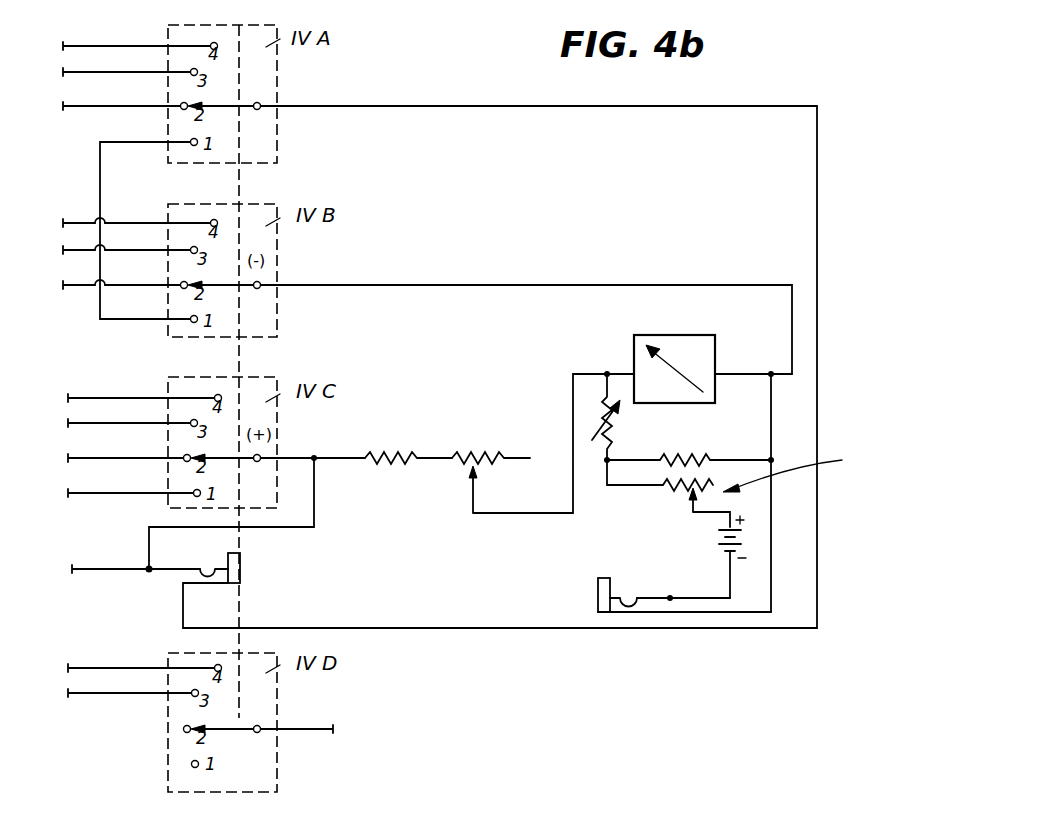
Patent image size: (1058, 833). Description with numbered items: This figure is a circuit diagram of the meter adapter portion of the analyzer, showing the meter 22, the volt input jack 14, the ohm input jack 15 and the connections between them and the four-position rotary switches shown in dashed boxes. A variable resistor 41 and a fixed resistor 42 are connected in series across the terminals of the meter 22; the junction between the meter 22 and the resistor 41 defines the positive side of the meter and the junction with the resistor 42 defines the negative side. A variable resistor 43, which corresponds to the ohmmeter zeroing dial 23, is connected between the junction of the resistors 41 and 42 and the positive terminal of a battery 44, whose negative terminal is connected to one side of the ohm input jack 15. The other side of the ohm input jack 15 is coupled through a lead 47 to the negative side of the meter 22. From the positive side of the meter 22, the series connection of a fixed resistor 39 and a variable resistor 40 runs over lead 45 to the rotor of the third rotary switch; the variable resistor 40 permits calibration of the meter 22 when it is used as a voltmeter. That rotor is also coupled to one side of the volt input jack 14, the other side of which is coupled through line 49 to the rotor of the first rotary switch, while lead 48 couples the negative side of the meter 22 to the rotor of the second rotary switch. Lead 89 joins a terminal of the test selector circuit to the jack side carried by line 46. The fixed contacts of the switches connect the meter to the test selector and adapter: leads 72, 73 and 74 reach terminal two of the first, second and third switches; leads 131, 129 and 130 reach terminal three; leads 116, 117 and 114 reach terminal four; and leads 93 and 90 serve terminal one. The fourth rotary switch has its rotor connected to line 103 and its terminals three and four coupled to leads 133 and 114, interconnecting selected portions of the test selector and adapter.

The volt input jack 14 is at (240, 578).
The ohm input jack 15 is at (598, 591).
The meter 22 is at (715, 336).
The ohmmeter zeroing dial 23 is at (837, 486).
The fixed resistor 39 is at (408, 452).
The variable resistor 40 is at (469, 452).
The variable resistor 41 is at (623, 427).
The fixed resistor 42 is at (700, 455).
The variable resistor 43 is at (671, 500).
The battery 44 is at (722, 540).
The lead 45 is at (341, 458).
The line 46 is at (269, 528).
The lead 47 is at (771, 564).
The lead 48 is at (437, 284).
The line 49 is at (417, 106).
The lead 72 is at (111, 105).
The lead 73 is at (84, 290).
The lead 74 is at (123, 456).
The lead 89 is at (168, 572).
The lead 90 is at (115, 491).
The lead 93 is at (98, 142).
The line 103 is at (300, 729).
The lead 114 is at (131, 396).
The lead 116 is at (111, 46).
The lead 117 is at (87, 218).
The lead 129 is at (113, 257).
The lead 130 is at (121, 422).
The lead 131 is at (111, 72).
The lead 133 is at (116, 697).